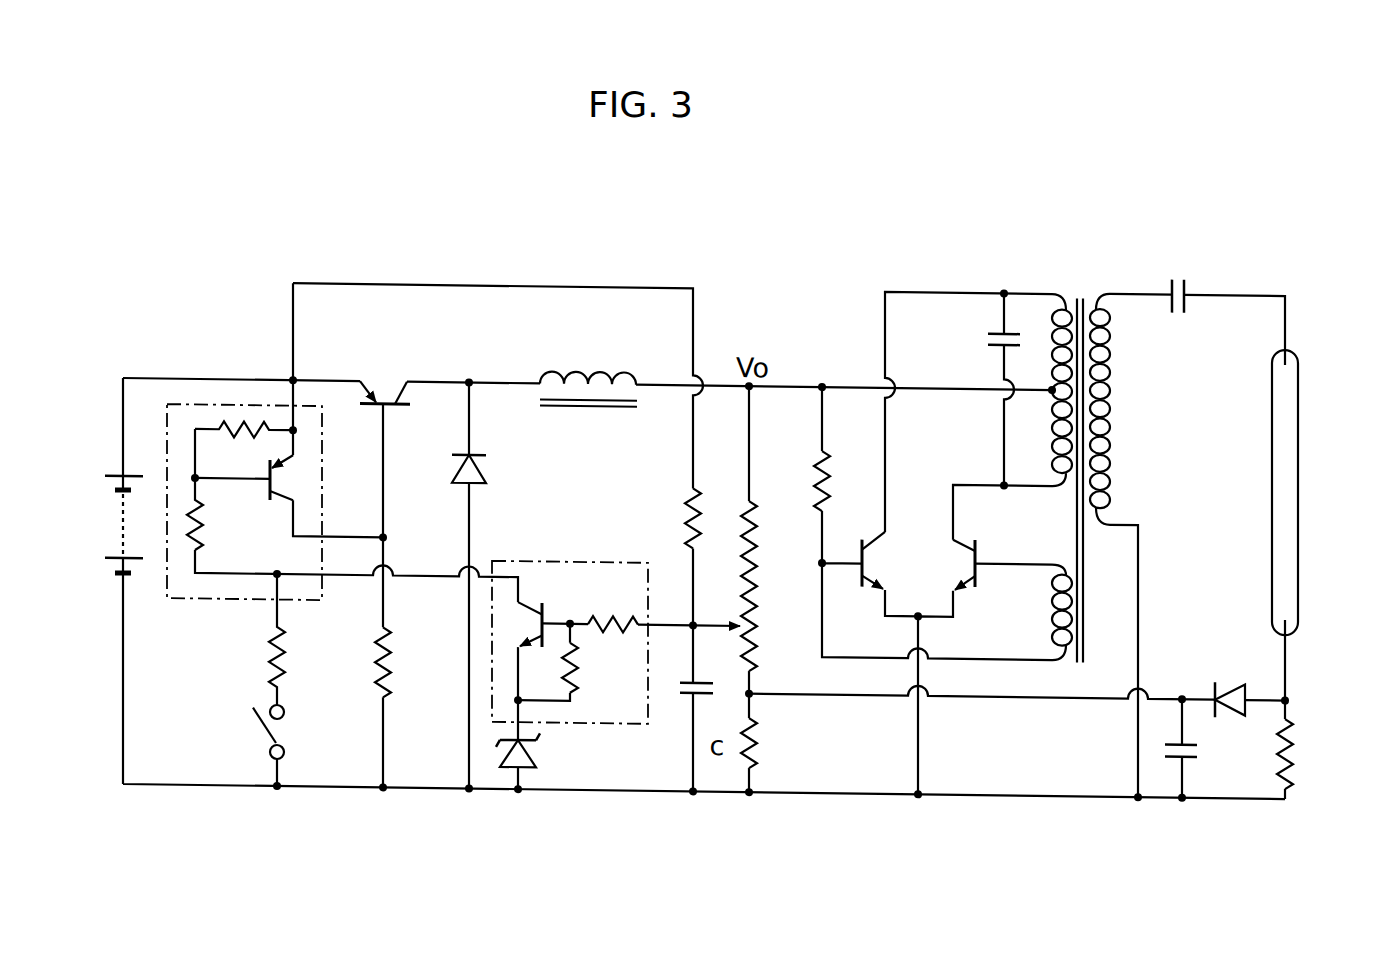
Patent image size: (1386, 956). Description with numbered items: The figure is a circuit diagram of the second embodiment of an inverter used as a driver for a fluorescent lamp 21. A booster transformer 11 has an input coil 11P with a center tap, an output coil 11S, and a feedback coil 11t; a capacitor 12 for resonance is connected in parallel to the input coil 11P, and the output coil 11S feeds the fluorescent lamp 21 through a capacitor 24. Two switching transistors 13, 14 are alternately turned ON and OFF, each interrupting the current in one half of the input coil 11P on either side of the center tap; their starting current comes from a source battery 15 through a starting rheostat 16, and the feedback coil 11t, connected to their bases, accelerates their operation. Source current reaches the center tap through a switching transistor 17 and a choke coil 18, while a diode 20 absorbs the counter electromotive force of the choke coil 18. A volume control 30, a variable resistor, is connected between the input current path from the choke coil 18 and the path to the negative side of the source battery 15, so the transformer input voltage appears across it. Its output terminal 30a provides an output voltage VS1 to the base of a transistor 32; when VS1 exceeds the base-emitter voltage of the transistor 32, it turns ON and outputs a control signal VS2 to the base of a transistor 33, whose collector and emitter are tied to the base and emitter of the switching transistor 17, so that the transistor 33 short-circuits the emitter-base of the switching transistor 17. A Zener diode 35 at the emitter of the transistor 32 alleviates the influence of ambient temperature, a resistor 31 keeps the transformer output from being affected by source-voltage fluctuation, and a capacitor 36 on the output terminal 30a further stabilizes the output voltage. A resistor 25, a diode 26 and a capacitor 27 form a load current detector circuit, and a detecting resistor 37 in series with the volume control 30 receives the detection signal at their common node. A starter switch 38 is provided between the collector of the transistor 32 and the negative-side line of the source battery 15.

The booster transformer 11 is at (1080, 285).
The input coil 11P is at (1048, 323).
The output coil 11S is at (1105, 372).
The feedback coil 11t is at (1050, 600).
The capacitor for resonance 12 is at (985, 328).
The switching transistor 13 is at (850, 567).
The switching transistor 14 is at (978, 537).
The source battery 15 is at (123, 534).
The starting rheostat 16 is at (833, 487).
The switching transistor 17 is at (373, 377).
The choke coil 18 is at (585, 366).
The diode 20 is at (482, 464).
The fluorescent lamp 21 is at (1288, 425).
The capacitor 24 is at (1177, 264).
The resistor 25 is at (1293, 738).
The diode 26 is at (1227, 673).
The capacitor 27 is at (1203, 736).
The volume control 30 is at (765, 542).
The output terminal 30a is at (718, 611).
The resistor 31 is at (685, 513).
The transistor 32 is at (548, 600).
The transistor 33 is at (257, 493).
The Zener diode 35 is at (525, 750).
The capacitor 36 is at (672, 683).
The detecting resistor 37 is at (762, 727).
The starter switch 38 is at (267, 728).
The output voltage VS1 is at (601, 655).
The control signal VS2 is at (422, 574).